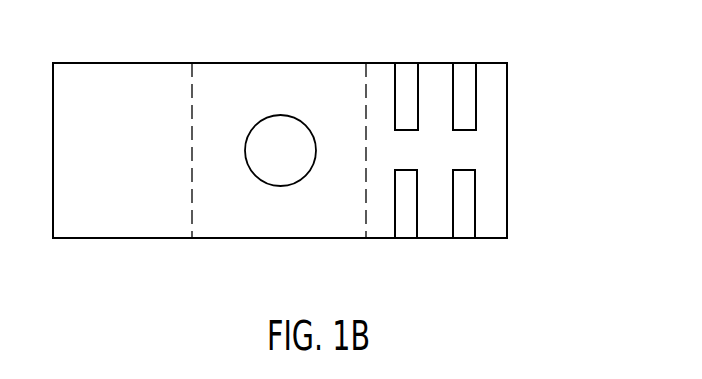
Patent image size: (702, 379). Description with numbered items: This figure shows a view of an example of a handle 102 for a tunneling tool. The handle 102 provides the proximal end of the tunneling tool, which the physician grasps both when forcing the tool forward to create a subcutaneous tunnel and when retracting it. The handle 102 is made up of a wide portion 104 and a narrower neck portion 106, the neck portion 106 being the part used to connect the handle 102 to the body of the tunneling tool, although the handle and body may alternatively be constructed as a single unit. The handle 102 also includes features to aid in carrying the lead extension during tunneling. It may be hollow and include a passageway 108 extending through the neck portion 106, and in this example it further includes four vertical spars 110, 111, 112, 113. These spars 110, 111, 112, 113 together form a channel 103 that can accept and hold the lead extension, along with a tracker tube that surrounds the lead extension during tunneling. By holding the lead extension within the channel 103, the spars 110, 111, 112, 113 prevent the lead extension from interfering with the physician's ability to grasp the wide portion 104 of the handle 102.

The handle 102 is at (514, 82).
The channel 103 is at (470, 152).
The wide portion 104 is at (507, 122).
The neck portion 106 is at (192, 200).
The passageway 108 is at (272, 187).
The vertical spar 110 is at (395, 218).
The vertical spar 111 is at (395, 93).
The vertical spar 112 is at (475, 212).
The vertical spar 113 is at (453, 92).